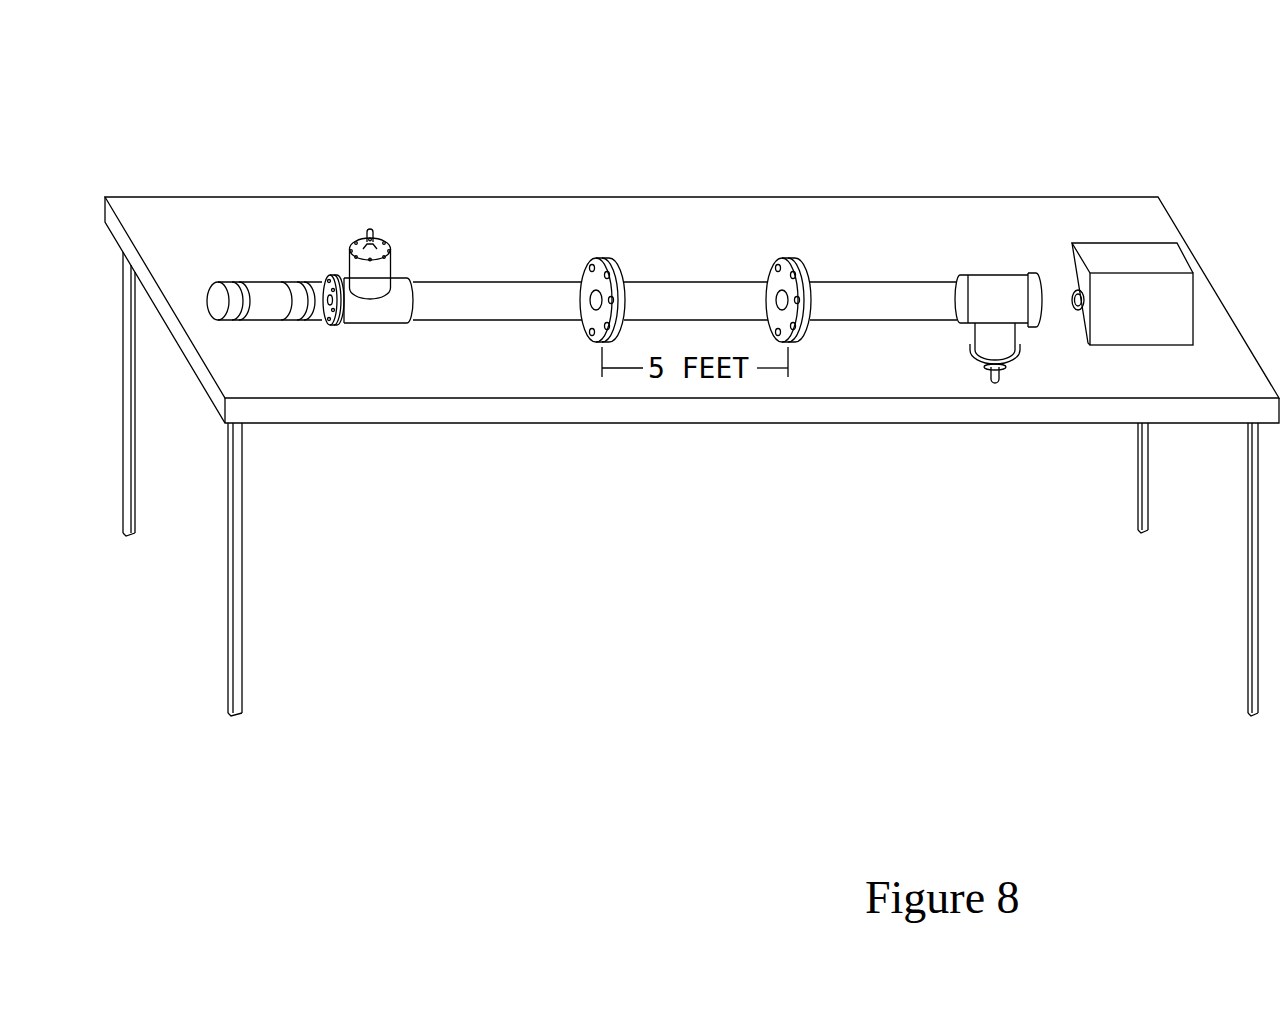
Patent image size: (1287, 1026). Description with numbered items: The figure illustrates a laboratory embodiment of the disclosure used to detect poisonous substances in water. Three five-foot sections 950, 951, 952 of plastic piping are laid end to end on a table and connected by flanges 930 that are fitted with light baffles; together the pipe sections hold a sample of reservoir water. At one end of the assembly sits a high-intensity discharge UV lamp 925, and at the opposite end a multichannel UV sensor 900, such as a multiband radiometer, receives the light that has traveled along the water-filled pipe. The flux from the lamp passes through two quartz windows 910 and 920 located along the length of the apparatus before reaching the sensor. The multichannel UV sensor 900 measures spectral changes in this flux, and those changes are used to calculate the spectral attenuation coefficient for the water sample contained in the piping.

The multichannel UV sensor 900 is at (264, 282).
The quartz window 910 is at (338, 323).
The quartz window 920 is at (982, 244).
The high-intensity discharge UV lamp 925 is at (1095, 252).
The flange 930 is at (790, 345).
The pipe section 950 is at (473, 297).
The pipe section 951 is at (683, 297).
The pipe section 952 is at (890, 297).